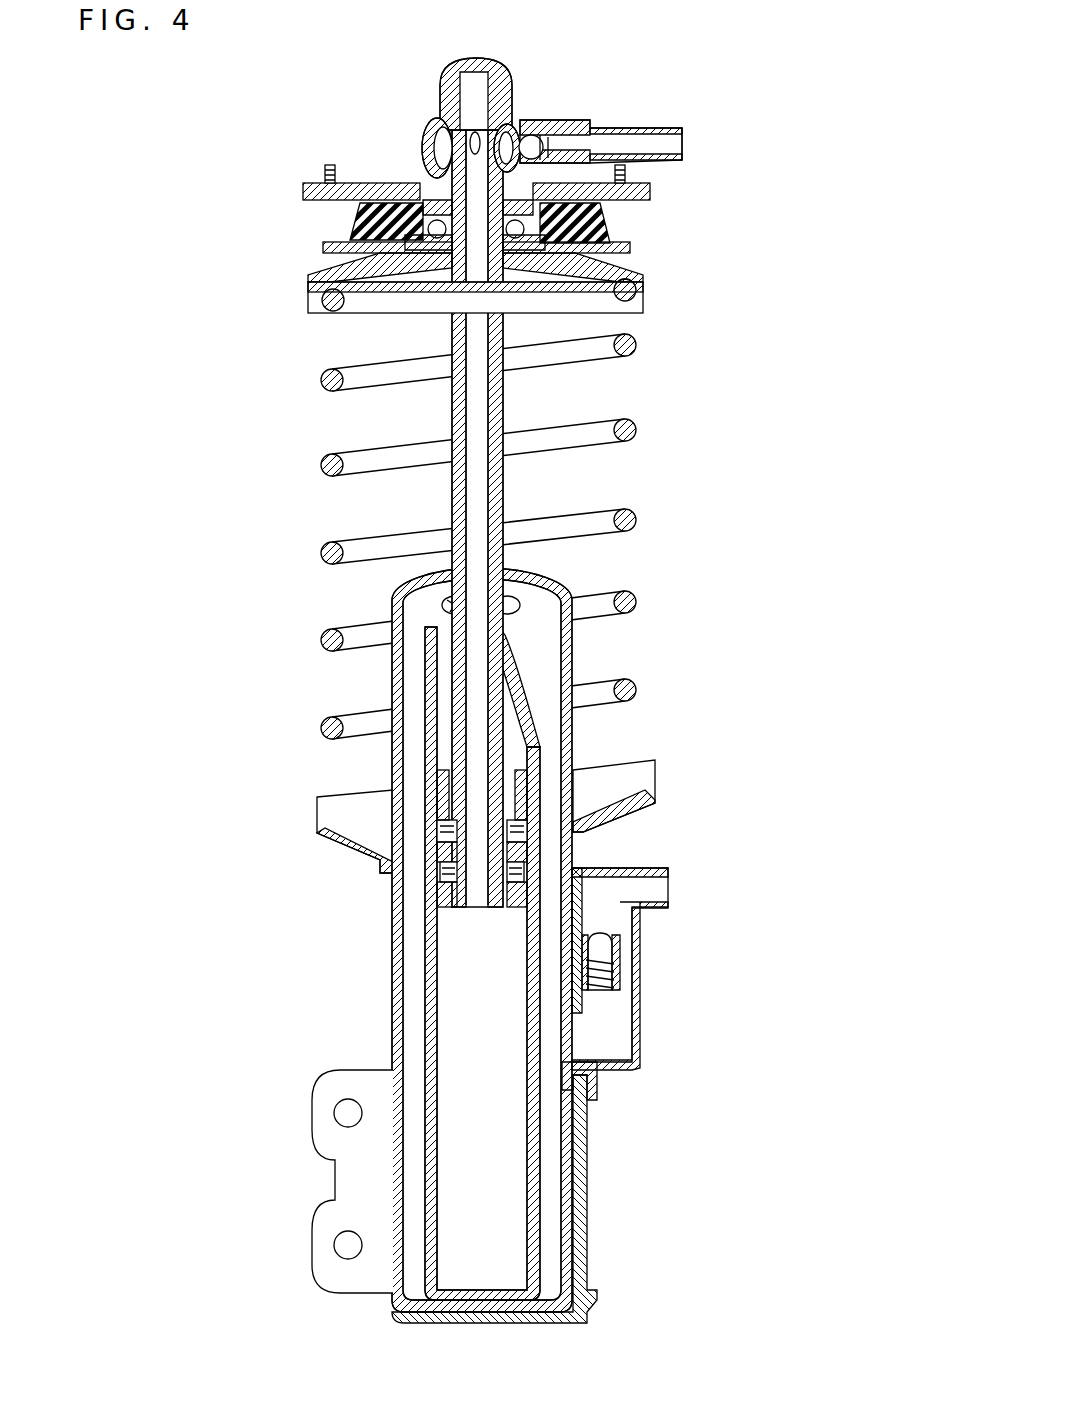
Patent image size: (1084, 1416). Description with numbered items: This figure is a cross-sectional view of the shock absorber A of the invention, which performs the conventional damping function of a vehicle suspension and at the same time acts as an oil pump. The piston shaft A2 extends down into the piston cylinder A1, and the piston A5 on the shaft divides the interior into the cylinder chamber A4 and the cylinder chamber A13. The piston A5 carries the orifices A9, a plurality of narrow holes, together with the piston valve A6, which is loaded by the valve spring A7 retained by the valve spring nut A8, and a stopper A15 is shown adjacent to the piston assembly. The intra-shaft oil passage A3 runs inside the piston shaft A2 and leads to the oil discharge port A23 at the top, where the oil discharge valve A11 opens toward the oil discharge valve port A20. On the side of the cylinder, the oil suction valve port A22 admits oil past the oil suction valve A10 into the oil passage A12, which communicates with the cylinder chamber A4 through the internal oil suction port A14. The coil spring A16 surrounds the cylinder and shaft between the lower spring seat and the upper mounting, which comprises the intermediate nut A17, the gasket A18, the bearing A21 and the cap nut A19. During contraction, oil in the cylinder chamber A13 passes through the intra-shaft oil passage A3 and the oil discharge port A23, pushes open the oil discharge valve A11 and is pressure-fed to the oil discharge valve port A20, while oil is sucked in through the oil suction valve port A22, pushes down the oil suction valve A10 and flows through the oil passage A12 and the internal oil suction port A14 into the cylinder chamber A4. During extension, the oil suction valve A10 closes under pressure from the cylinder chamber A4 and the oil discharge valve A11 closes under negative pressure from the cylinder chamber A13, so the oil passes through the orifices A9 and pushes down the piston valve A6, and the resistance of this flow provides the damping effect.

The shock absorber A is at (573, 582).
The piston cylinder A1 is at (523, 683).
The piston shaft A2 is at (505, 492).
The intra-shaft oil passage A3 is at (480, 437).
The cylinder chamber A4 is at (447, 697).
The piston A5 is at (432, 842).
The piston valve A6 is at (432, 862).
The valve spring A7 is at (434, 882).
The valve spring nut A8 is at (440, 905).
The orifice A9 is at (545, 822).
The oil suction valve A10 is at (596, 950).
The oil discharge valve A11 is at (530, 124).
The oil passage A12 is at (543, 745).
The cylinder chamber A13 is at (460, 1150).
The internal oil suction port A14 is at (440, 600).
The stopper A15 is at (423, 778).
The coil spring A16 is at (636, 346).
The intermediate nut A17 is at (427, 185).
The gasket A18 is at (434, 183).
The cap nut A19 is at (443, 92).
The oil discharge valve port A20 is at (682, 155).
The bearing A21 is at (350, 237).
The oil suction valve port A22 is at (668, 872).
The oil discharge port A23 is at (517, 100).